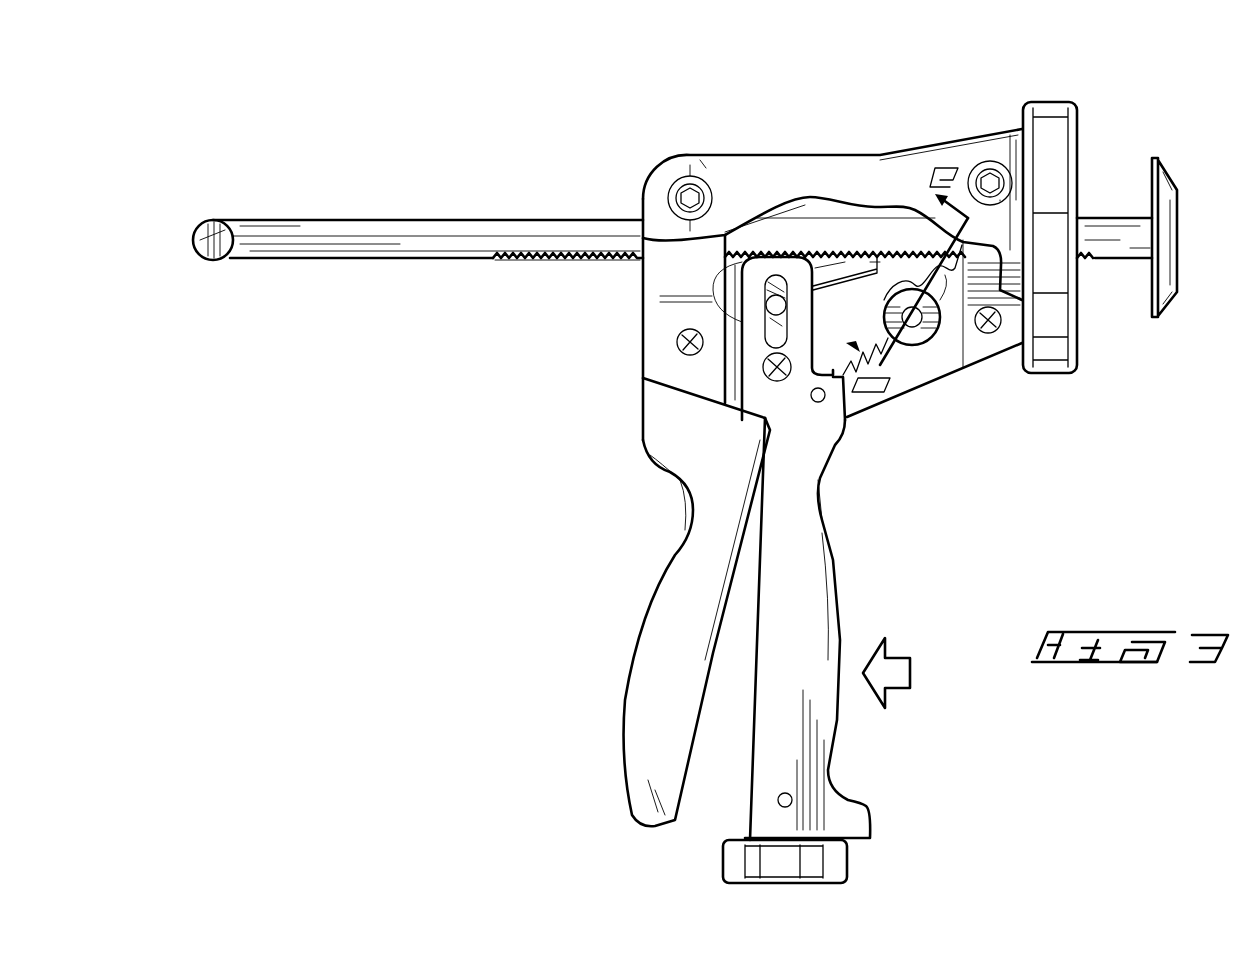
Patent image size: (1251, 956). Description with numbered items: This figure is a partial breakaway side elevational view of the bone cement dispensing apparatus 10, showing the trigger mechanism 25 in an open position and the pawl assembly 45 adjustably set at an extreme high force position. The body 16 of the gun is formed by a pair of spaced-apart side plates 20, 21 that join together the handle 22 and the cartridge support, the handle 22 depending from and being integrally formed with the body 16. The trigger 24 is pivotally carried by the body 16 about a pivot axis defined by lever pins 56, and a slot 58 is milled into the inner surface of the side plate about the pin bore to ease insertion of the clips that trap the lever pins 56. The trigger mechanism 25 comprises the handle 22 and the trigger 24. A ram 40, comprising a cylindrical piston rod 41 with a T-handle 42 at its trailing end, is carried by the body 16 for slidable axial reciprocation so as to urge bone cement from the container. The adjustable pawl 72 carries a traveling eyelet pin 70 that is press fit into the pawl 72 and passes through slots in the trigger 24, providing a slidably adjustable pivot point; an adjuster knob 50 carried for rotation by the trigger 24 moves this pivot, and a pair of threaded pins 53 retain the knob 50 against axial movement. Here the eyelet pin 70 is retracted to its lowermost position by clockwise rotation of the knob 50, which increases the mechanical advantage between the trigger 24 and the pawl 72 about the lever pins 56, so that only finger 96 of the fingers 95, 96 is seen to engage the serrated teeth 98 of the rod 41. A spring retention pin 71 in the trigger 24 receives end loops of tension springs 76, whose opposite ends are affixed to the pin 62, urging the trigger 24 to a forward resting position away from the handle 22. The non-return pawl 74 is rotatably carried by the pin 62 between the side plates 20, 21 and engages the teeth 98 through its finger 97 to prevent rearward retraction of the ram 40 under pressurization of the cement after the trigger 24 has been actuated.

The apparatus 10 is at (673, 103).
The body 16 is at (638, 397).
The side plate 20 is at (790, 158).
The side plate 21 is at (932, 372).
The handle 22 is at (648, 662).
The trigger 24 is at (822, 622).
The trigger mechanism 25 is at (845, 497).
The ram 40 is at (450, 216).
The piston rod 41 is at (338, 262).
The T-handle 42 is at (205, 248).
The pawl assembly 45 is at (872, 208).
The adjuster knob 50 is at (848, 866).
The threaded pin 53 is at (790, 797).
The lever pin 56 is at (790, 382).
The slot 58 is at (773, 275).
The pin 62 is at (916, 345).
The traveling eyelet pin 70 is at (776, 305).
The spring retention pin 71 is at (838, 435).
The pawl 72 is at (834, 272).
The non-return pawl 74 is at (938, 358).
The tension spring 76 is at (843, 380).
The finger 95 is at (825, 262).
The finger 96 is at (877, 252).
The finger 97 is at (962, 247).
The serrated teeth 98 is at (560, 268).